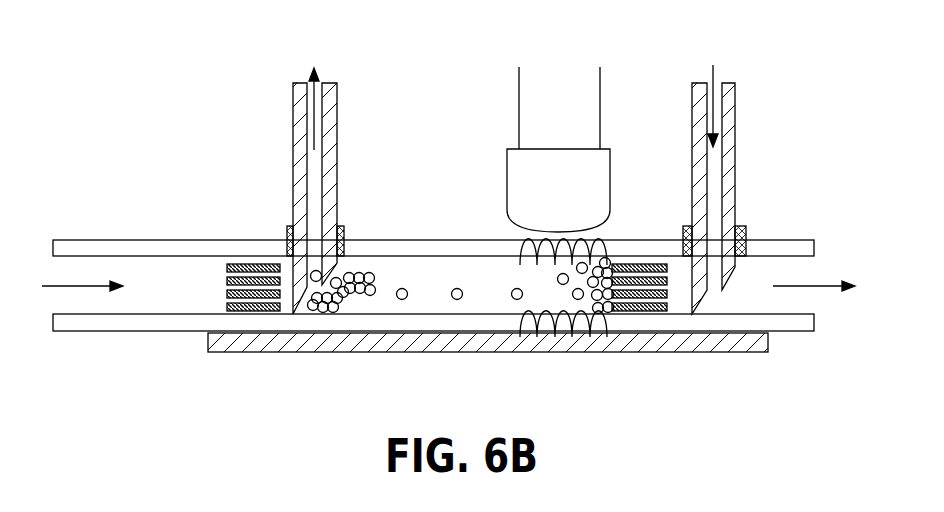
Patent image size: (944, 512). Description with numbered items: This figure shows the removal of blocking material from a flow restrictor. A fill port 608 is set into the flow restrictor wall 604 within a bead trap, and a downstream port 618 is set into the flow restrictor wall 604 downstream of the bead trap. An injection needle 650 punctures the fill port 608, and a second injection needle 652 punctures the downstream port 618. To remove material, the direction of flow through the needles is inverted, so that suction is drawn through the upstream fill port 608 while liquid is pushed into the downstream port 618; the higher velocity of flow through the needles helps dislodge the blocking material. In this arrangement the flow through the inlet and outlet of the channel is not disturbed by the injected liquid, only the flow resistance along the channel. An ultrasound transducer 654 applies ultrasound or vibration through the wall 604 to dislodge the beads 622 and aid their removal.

The flow restrictor wall 604 is at (120, 248).
The fill port 608 is at (289, 227).
The downstream port 618 is at (683, 226).
The beads 622 is at (457, 300).
The injection needle 650 is at (293, 108).
The injection needle 652 is at (692, 103).
The ultrasound transducer 654 is at (572, 203).